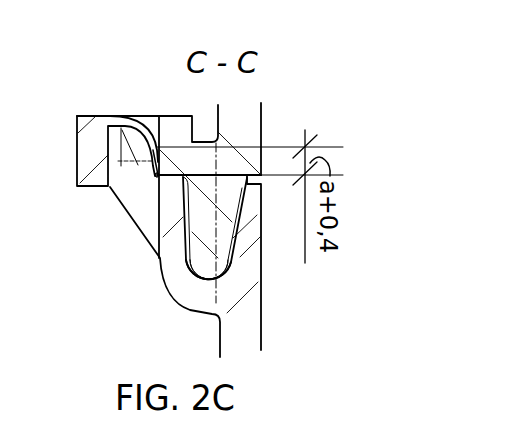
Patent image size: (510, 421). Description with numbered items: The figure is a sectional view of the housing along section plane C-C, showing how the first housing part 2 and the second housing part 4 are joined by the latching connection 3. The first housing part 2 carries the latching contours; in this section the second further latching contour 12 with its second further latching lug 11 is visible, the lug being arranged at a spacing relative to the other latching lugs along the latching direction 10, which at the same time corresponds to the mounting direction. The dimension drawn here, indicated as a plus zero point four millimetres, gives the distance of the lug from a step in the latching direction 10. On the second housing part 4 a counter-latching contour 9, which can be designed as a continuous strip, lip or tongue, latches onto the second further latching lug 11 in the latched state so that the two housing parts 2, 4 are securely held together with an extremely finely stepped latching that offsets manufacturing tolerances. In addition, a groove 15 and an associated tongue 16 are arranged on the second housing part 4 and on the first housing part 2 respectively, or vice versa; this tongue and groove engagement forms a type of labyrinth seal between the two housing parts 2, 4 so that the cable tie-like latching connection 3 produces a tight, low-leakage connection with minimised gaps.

The first housing part 2 is at (247, 120).
The latching connection 3 is at (171, 106).
The second housing part 4 is at (251, 352).
The counter-latching contour 9 is at (158, 157).
The latching direction 10 is at (137, 106).
The second further latching lug 11 is at (157, 177).
The second further latching contour 12 is at (157, 177).
The groove 15 is at (216, 248).
The tongue 16 is at (198, 268).